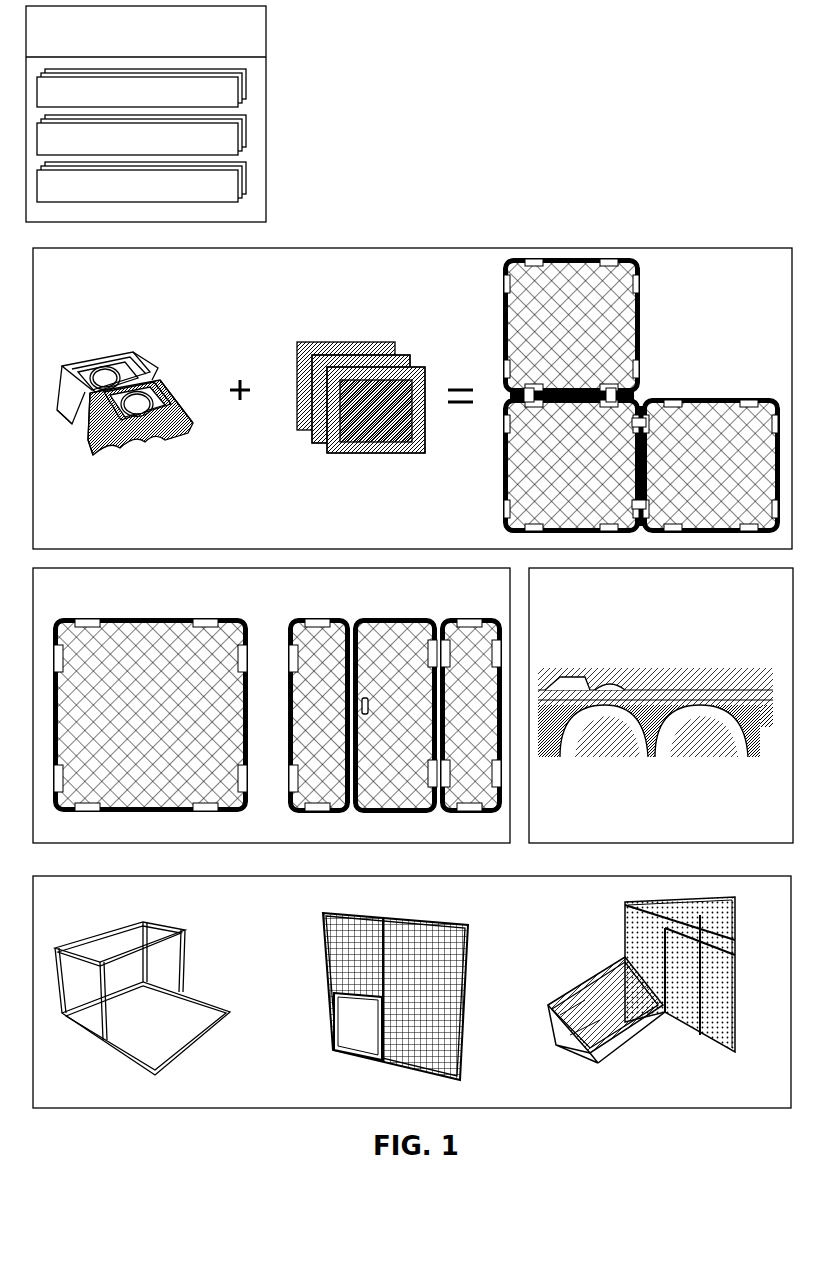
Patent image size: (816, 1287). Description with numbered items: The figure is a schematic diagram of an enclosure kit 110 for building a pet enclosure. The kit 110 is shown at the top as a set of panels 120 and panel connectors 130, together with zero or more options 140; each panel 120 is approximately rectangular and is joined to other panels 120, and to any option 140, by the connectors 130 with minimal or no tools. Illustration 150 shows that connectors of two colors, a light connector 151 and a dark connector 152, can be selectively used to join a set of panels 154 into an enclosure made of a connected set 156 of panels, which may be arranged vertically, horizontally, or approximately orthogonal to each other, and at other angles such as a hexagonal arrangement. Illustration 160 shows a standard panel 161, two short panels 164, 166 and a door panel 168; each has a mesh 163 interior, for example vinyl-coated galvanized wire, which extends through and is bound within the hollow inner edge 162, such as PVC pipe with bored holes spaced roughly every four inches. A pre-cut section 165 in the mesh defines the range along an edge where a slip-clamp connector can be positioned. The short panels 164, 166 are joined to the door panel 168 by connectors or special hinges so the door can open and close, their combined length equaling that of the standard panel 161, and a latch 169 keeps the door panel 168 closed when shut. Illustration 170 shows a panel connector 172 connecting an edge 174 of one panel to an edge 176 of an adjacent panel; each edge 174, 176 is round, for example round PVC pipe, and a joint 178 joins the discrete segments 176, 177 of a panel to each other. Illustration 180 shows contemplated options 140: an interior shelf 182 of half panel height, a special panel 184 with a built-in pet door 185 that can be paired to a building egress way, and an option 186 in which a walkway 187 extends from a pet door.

The enclosure kit 110 is at (146, 114).
The panel 120 is at (141, 88).
The panel connector 130 is at (141, 135).
The option 140 is at (141, 182).
The illustration 150 is at (84, 283).
The light connector 151 is at (100, 350).
The dark connector 152 is at (165, 438).
The set of panels 154 is at (385, 442).
The set of panels 156 is at (710, 396).
The illustration 160 is at (76, 599).
The standard panel 161 is at (100, 620).
The inner edge 162 is at (148, 618).
The mesh 163 is at (122, 757).
The short panel 164 is at (302, 619).
The pre-cut section 165 is at (245, 657).
The short panel 166 is at (450, 619).
The door panel 168 is at (372, 619).
The latch 169 is at (367, 707).
The illustration 170 is at (782, 606).
The panel connector 172 is at (580, 680).
The edge 174 is at (590, 712).
The edge 176 is at (606, 690).
The segment 177 is at (714, 690).
The joint 178 is at (663, 690).
The illustration 180 is at (74, 908).
The interior shelf 182 is at (173, 925).
The special panel 184 is at (410, 916).
The pet door 185 is at (345, 1013).
The option 186 is at (625, 940).
The walkway 187 is at (615, 1055).